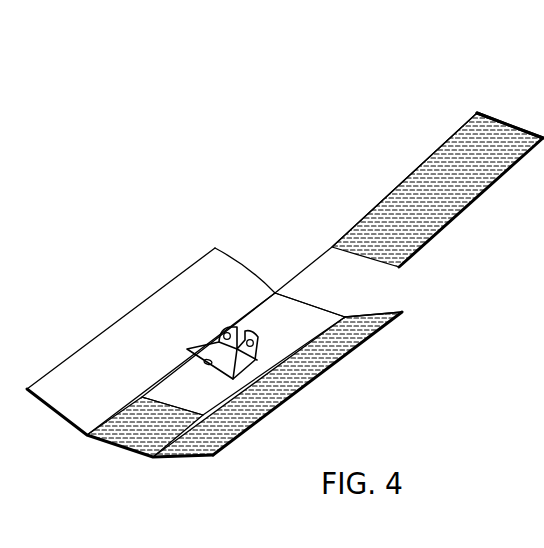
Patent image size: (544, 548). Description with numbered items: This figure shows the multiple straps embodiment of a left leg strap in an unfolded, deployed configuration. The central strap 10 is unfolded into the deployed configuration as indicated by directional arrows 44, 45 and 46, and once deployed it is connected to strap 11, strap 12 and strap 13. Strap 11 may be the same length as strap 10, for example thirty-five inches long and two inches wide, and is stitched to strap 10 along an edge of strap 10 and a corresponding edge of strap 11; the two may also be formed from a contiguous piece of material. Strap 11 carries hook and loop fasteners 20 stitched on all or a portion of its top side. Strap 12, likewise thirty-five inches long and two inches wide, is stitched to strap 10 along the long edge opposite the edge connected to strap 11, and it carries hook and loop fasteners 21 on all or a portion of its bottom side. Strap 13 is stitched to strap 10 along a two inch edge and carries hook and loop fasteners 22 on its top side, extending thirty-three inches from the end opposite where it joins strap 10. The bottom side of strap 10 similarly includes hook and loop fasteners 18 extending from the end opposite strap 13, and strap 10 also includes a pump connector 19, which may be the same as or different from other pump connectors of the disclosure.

The strap 10 is at (203, 405).
The strap 11 is at (327, 357).
The strap 12 is at (100, 347).
The strap 13 is at (447, 195).
The hook and loop fasteners 18 is at (142, 445).
The pump connector 19 is at (213, 353).
The hook and loop fasteners 20 is at (380, 316).
The hook and loop fasteners 21 is at (50, 410).
The hook and loop fasteners 22 is at (493, 128).
The directional arrow 44 is at (225, 263).
The directional arrow 45 is at (426, 160).
The directional arrow 46 is at (353, 326).